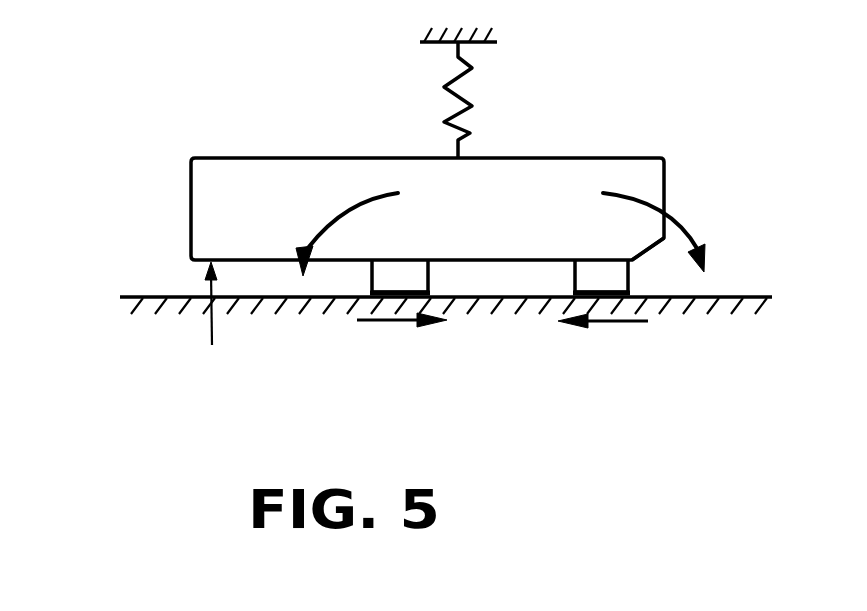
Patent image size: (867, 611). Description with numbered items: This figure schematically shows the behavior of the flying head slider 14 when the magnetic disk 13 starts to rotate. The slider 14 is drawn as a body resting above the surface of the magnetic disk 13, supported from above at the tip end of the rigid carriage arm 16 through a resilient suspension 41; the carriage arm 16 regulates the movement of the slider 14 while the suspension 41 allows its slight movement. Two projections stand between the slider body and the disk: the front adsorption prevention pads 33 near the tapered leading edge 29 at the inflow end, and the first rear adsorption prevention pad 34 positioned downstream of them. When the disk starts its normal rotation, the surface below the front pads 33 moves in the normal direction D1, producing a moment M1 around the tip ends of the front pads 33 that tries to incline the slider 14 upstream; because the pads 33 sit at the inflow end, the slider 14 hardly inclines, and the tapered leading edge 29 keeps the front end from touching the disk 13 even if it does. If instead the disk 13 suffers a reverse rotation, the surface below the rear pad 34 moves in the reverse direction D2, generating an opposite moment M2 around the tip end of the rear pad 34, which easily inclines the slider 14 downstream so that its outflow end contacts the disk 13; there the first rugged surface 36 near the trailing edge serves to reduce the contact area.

The magnetic disk 13 is at (128, 296).
The flying head slider 14 is at (214, 158).
The carriage arm 16 is at (432, 44).
The tapered leading edge 29 is at (639, 262).
The front adsorption prevention pads 33 is at (560, 276).
The first rear adsorption prevention pad 34 is at (438, 278).
The first rugged surface 36 is at (213, 325).
The resilient suspension 41 is at (463, 58).
The moment M1 is at (682, 223).
The moment M2 is at (322, 226).
The normal direction D1 is at (630, 324).
The reverse direction D2 is at (370, 323).